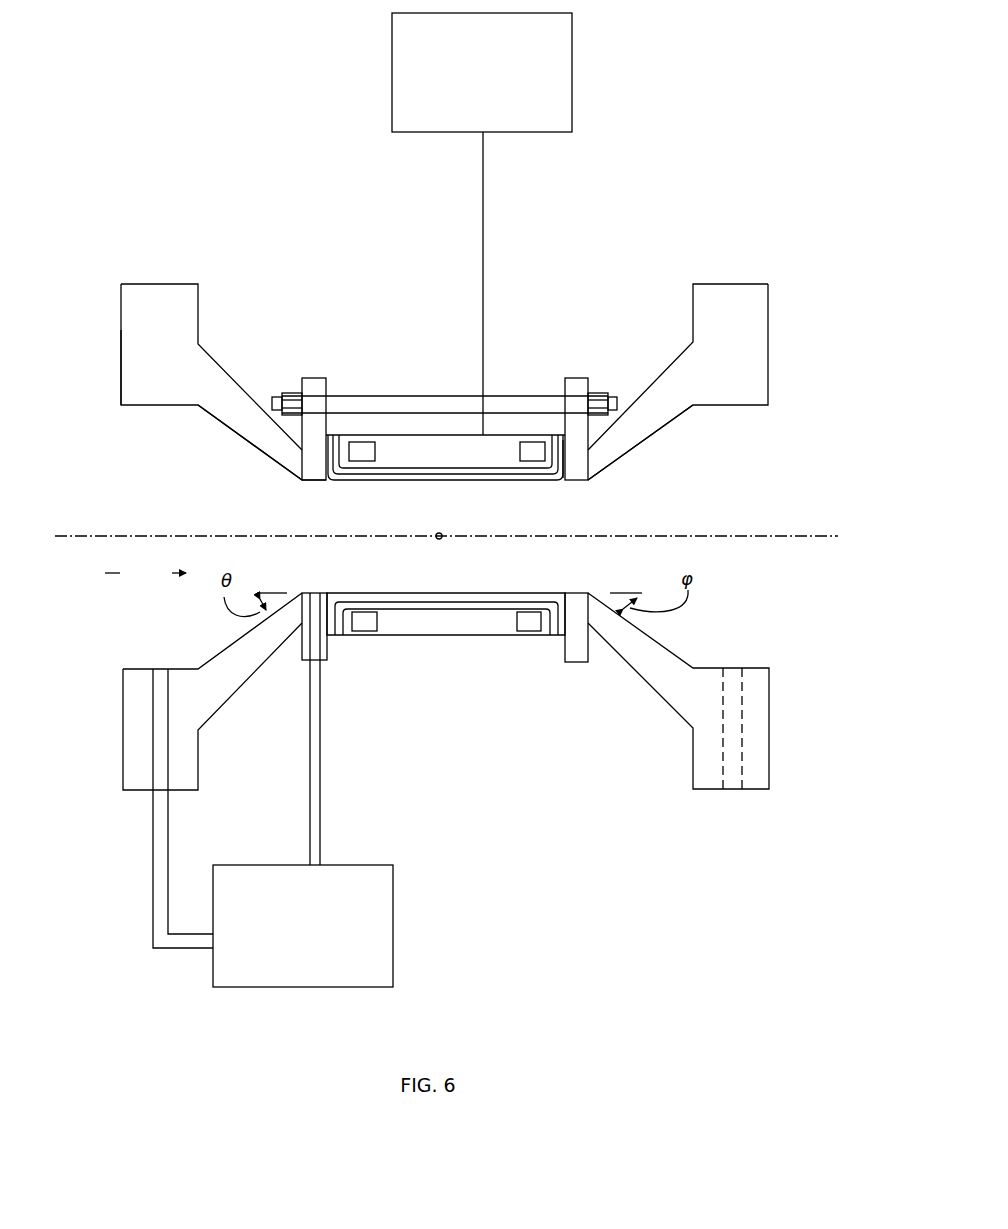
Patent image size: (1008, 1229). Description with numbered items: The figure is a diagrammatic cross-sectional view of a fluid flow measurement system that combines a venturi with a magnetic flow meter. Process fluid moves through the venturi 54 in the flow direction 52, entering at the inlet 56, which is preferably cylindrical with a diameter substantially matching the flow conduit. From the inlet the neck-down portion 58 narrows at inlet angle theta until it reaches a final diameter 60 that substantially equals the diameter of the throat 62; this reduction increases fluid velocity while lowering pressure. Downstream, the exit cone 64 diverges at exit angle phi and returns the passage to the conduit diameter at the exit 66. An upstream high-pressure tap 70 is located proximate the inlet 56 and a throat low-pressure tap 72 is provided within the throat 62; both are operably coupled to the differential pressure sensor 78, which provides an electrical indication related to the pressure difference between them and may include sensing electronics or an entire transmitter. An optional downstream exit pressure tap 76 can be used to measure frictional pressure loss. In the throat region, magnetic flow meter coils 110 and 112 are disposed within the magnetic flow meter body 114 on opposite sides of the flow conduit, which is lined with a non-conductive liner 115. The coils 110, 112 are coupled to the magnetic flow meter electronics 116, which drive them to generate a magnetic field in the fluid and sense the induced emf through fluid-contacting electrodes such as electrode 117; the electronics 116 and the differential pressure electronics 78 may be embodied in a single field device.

The direction of fluid flow 52 is at (145, 575).
The venturi 54 is at (119, 345).
The inlet 56 is at (121, 404).
The neck-down portion 58 is at (293, 484).
The final diameter 60 is at (302, 482).
The throat 62 is at (548, 483).
The exit cone 64 is at (642, 438).
The exit 66 is at (768, 357).
The upstream pressure tap 70 is at (166, 680).
The throat pressure tap 72 is at (313, 593).
The downstream exit pressure tap 76 is at (723, 695).
The differential pressure sensor 78 is at (393, 927).
The magnetic flow meter coil 110 is at (375, 450).
The magnetic flow meter coil 112 is at (363, 632).
The magnetic flow meter body 114 is at (500, 593).
The non-conductive liner 115 is at (548, 483).
The magnetic flow meter electronics 116 is at (572, 94).
The electrode 117 is at (441, 533).